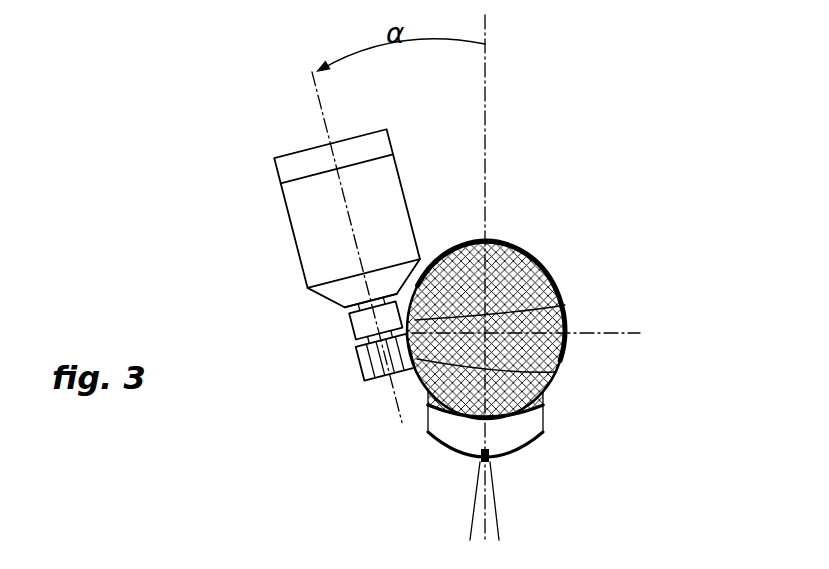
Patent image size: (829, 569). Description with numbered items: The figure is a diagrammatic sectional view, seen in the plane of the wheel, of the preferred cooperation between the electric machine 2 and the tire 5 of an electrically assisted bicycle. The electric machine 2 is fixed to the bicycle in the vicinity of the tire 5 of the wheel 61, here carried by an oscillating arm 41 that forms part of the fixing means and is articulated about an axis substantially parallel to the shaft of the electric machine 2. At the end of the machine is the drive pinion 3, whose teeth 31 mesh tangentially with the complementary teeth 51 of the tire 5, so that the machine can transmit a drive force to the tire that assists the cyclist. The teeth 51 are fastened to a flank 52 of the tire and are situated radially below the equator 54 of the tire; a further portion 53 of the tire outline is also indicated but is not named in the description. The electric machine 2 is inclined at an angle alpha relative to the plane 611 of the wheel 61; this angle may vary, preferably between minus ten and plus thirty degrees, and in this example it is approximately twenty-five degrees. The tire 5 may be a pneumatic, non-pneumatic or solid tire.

The electric machine 2 is at (350, 222).
The drive pinion 3 is at (357, 254).
The teeth of the drive pinion 31 is at (385, 357).
The oscillating arm 41 is at (375, 320).
The tire 5 is at (553, 283).
The teeth of the tire 51 is at (555, 372).
The flank of the tire 52 is at (563, 318).
The coating 53 is at (520, 244).
The equator 54 is at (633, 332).
The rear wheel 61 is at (568, 447).
The plane of the wheel 611 is at (485, 125).